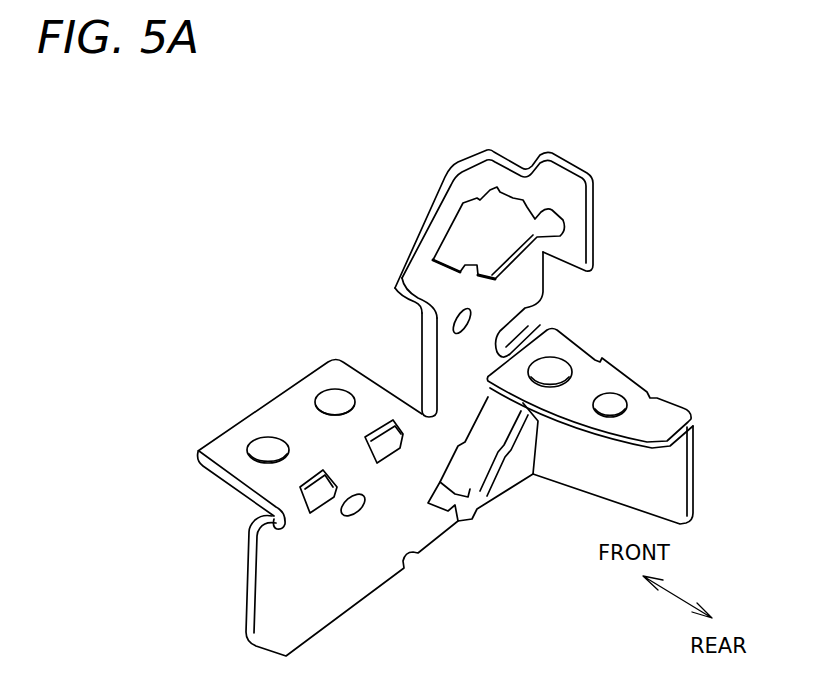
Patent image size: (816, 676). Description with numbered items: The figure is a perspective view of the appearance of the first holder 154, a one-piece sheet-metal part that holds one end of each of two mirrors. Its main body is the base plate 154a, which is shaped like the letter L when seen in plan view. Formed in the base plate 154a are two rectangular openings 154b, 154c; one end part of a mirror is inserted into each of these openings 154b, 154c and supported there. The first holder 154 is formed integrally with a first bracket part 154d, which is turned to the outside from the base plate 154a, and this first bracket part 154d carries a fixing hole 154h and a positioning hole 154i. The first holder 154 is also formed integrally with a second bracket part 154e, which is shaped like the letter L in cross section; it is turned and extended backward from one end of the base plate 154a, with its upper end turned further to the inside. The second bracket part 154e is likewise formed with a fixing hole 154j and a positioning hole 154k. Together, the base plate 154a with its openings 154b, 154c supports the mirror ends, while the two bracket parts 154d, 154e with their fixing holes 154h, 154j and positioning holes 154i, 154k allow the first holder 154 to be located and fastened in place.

The first holder 154 is at (287, 135).
The base plate 154a is at (360, 587).
The rectangular opening 154b is at (453, 225).
The rectangular opening 154c is at (491, 474).
The first bracket part 154d is at (293, 403).
The second bracket part 154e is at (583, 367).
The fixing hole 154h is at (262, 438).
The positioning hole 154i is at (332, 392).
The fixing hole 154j is at (550, 358).
The positioning hole 154k is at (613, 392).